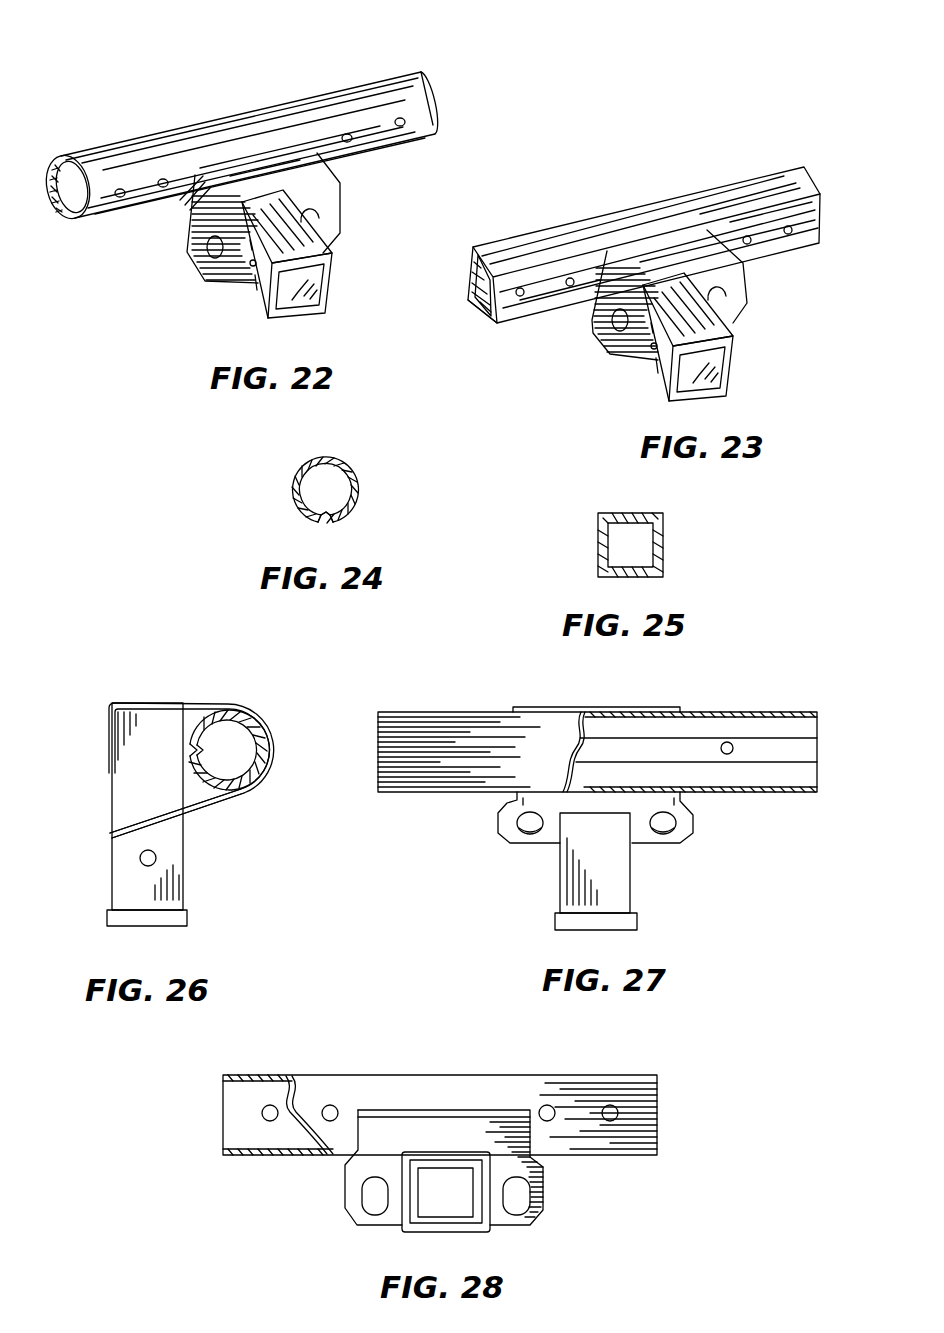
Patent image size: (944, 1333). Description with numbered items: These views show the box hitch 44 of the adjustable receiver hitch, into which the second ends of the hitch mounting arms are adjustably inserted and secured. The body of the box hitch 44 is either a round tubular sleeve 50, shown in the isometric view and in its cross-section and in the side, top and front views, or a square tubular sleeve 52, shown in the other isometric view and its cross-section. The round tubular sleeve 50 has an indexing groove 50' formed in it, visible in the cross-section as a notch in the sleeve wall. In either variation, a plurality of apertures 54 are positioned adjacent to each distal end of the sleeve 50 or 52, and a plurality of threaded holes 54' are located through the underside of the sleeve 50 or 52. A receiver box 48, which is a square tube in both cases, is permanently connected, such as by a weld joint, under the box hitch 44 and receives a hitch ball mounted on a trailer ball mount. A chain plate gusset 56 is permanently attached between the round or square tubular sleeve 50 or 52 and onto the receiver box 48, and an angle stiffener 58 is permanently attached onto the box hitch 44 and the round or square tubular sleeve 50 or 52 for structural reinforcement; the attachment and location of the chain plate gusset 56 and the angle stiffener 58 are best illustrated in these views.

In FIG. 22, the box hitch 44 is at (177, 110).
In FIG. 23, the box hitch 44 is at (633, 190).
In FIG. 26, the box hitch 44 is at (117, 680).
In FIG. 27, the box hitch 44 is at (712, 700).
In FIG. 28, the box hitch 44 is at (418, 1060).
In FIG. 22, the receiver box 48 is at (330, 303).
In FIG. 23, the receiver box 48 is at (738, 362).
In FIG. 26, the receiver box 48 is at (183, 903).
In FIG. 27, the receiver box 48 is at (632, 895).
In FIG. 28, the receiver box 48 is at (418, 1230).
In FIG. 22, the round tubular sleeve 50 is at (238, 180).
In FIG. 24, the round tubular sleeve 50 is at (367, 490).
In FIG. 26, the round tubular sleeve 50 is at (247, 731).
In FIG. 27, the round tubular sleeve 50 is at (597, 712).
In FIG. 28, the round tubular sleeve 50 is at (485, 1138).
In FIG. 24, the indexing groove 50' is at (230, 494).
In FIG. 23, the square tubular sleeve 52 is at (486, 325).
In FIG. 25, the square tubular sleeve 52 is at (663, 552).
In FIG. 22, the apertures 54 is at (462, 107).
In FIG. 23, the apertures 54 is at (529, 337).
In FIG. 27, the apertures 54 is at (699, 702).
In FIG. 28, the apertures 54 is at (478, 1136).
In FIG. 27, the threaded holes 54' is at (750, 789).
In FIG. 28, the threaded holes 54' is at (278, 1154).
In FIG. 22, the chain plate gusset 56 is at (213, 282).
In FIG. 23, the chain plate gusset 56 is at (610, 357).
In FIG. 26, the chain plate gusset 56 is at (203, 803).
In FIG. 27, the chain plate gusset 56 is at (515, 842).
In FIG. 28, the chain plate gusset 56 is at (530, 1213).
In FIG. 26, the angle stiffener 58 is at (190, 700).
In FIG. 27, the angle stiffener 58 is at (576, 707).